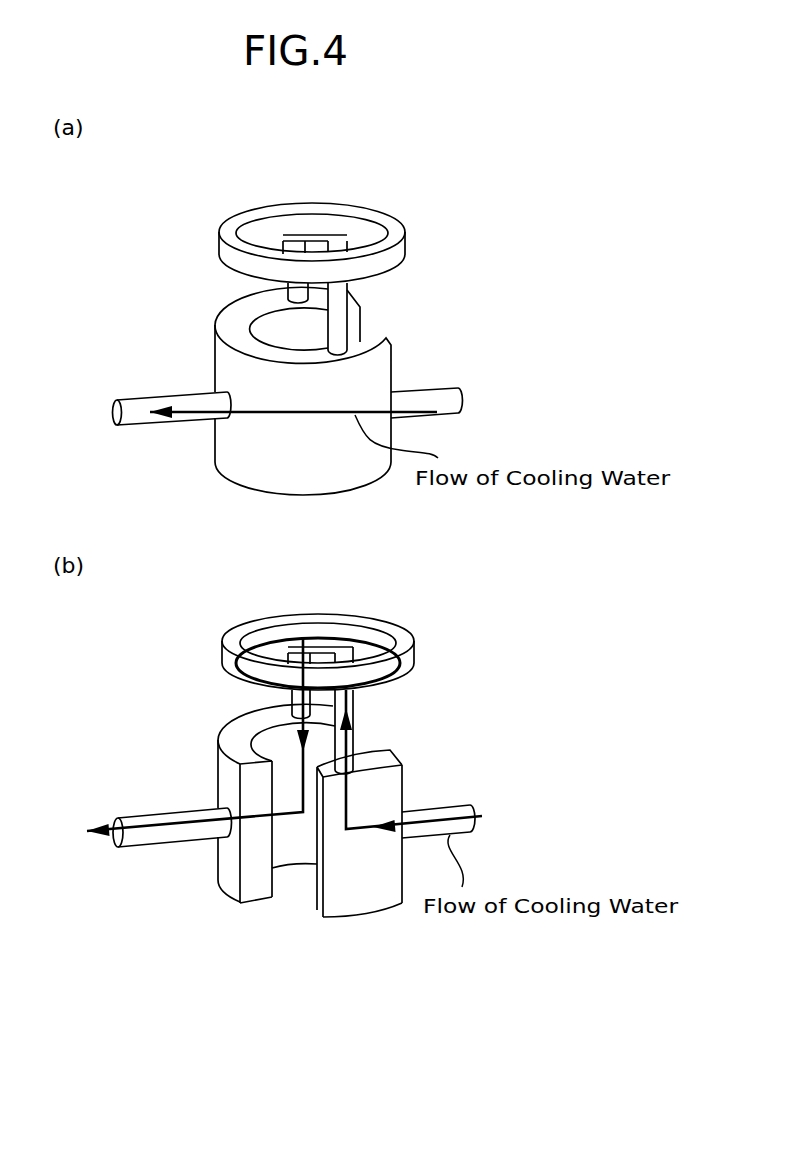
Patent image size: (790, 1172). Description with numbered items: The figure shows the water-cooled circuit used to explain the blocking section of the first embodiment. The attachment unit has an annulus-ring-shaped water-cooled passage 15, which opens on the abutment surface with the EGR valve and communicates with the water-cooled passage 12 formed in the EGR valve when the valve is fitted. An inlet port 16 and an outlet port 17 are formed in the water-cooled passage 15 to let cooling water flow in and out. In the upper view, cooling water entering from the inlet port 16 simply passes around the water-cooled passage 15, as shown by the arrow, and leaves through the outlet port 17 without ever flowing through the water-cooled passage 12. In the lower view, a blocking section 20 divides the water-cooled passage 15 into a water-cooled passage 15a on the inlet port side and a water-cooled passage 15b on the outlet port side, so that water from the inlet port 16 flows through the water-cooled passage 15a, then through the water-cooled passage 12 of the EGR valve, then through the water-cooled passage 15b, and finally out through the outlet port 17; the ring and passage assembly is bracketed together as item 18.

The water-cooled passage 12 is at (220, 253).
The water-cooled passage 15 is at (216, 346).
The water-cooled passage 15a is at (397, 794).
The water-cooled passage 15b is at (323, 733).
The inlet port 16 is at (435, 388).
The outlet port 17 is at (146, 398).
The cooling unit 18 is at (142, 204).
The blocking section 20 is at (320, 892).